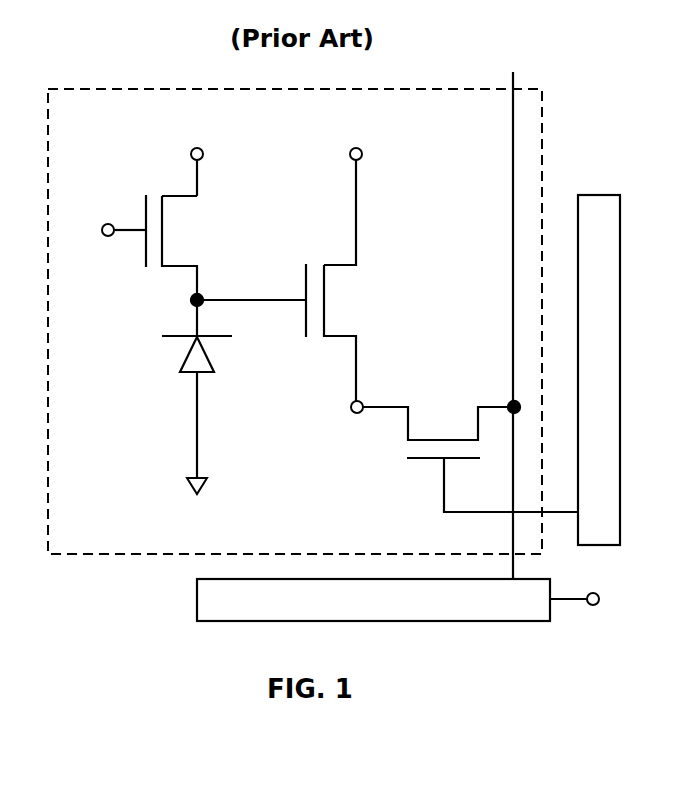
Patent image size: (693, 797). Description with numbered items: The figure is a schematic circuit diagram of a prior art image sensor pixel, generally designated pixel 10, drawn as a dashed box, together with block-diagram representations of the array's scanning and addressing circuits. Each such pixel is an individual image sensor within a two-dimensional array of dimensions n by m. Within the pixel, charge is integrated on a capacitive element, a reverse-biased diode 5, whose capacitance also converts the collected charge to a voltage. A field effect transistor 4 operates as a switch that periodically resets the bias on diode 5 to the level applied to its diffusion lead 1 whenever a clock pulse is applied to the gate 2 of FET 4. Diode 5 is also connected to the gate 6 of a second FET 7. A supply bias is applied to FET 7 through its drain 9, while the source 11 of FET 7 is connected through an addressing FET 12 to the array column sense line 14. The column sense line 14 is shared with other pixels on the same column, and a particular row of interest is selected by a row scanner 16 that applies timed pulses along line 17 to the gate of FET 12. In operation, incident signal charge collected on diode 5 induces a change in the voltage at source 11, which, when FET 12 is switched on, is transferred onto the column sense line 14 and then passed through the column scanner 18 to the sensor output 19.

The image pixel 10 is at (110, 84).
The FET diffusion lead 1 is at (197, 148).
The gate 2 is at (102, 229).
The Field Effect Transistor 4 is at (178, 239).
The reverse-biased diode 5 is at (216, 358).
The gate of FET 7 6 is at (303, 297).
The FET 7 is at (337, 300).
The drain of FET 7 9 is at (352, 148).
The source of FET 7 11 is at (350, 408).
The addressing FET 12 is at (448, 427).
The array column sense line 14 is at (513, 177).
The row scanner 16 is at (600, 195).
The line 17 is at (557, 513).
The column scanner 18 is at (197, 612).
The sensor output 19 is at (599, 596).